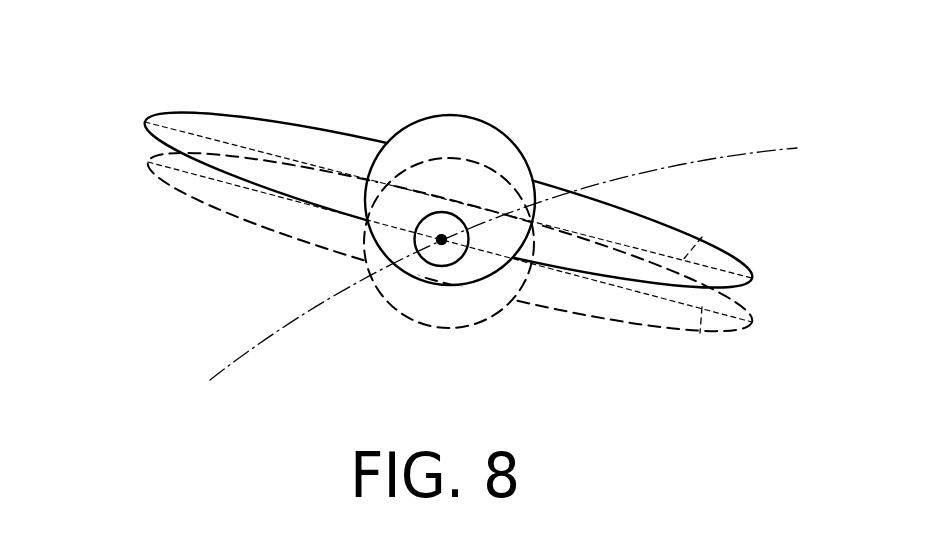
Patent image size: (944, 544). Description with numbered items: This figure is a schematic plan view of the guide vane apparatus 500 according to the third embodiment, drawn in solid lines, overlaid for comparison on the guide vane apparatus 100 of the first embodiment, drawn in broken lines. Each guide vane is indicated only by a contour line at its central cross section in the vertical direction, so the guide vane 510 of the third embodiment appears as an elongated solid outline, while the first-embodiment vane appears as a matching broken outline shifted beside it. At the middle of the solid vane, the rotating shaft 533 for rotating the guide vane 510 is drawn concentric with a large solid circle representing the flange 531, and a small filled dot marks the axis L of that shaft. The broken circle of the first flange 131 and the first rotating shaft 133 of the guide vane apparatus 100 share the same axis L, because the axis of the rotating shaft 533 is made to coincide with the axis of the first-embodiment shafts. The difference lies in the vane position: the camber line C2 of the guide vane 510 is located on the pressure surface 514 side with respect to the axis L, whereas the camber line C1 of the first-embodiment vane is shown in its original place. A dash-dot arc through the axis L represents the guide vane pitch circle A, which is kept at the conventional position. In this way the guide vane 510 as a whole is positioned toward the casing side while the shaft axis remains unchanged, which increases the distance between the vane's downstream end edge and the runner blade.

The guide vane apparatus 500 is at (449, 217).
The guide vane 510 is at (303, 142).
The pressure surface 514 is at (558, 183).
The first flange 531 is at (442, 115).
The rotating shaft 533 is at (438, 320).
The first rotating shaft 133 is at (445, 258).
The first flange 131 is at (403, 313).
The guide vane apparatus 100 is at (147, 198).
The axis L is at (441, 243).
The guide vane pitch circle A is at (757, 153).
The camber line C1 is at (700, 333).
The camber line C2 is at (702, 237).